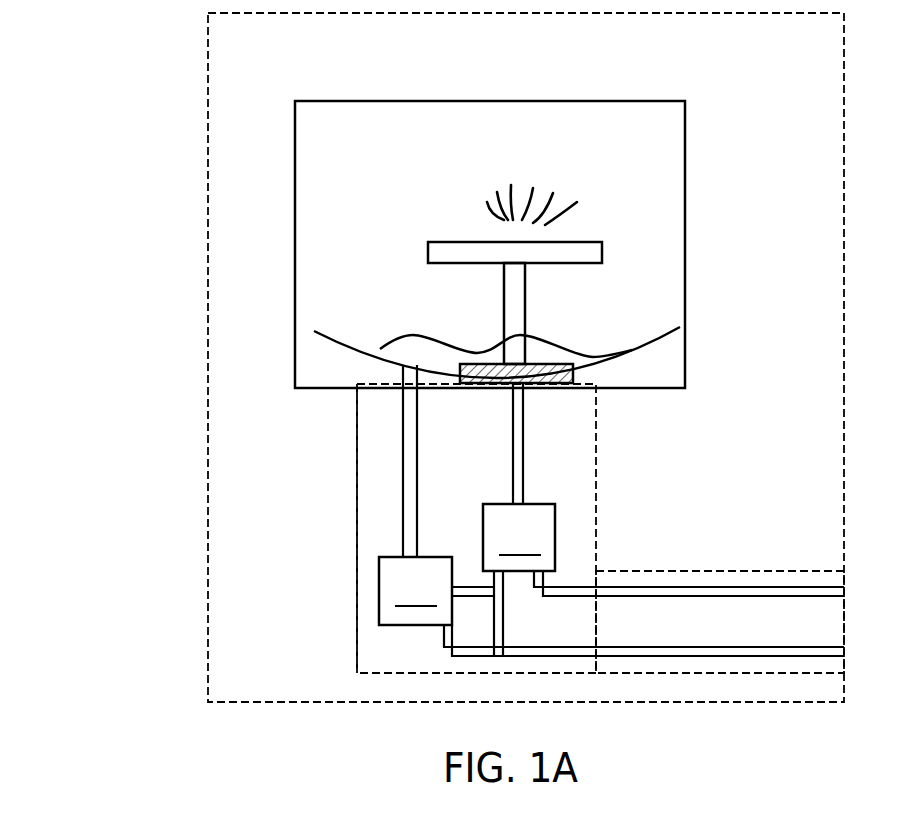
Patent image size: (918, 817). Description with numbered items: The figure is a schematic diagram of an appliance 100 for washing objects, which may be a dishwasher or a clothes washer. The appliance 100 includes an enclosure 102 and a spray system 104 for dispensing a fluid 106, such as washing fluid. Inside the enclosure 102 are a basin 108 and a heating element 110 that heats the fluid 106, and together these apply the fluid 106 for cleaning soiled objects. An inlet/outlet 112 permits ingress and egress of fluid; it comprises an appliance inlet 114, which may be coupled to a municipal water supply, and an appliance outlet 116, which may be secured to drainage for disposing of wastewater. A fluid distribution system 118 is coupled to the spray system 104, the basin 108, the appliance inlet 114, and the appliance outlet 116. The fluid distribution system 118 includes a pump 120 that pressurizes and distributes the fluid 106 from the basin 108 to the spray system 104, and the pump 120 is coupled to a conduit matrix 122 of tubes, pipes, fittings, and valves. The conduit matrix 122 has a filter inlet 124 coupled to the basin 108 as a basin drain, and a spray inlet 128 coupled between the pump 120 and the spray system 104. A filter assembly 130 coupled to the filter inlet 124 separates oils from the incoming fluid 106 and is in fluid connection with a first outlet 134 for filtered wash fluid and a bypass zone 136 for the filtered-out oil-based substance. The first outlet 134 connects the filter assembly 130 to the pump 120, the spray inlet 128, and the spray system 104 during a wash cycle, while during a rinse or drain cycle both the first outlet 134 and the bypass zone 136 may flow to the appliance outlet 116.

The appliance 100 is at (182, 50).
The enclosure 102 is at (702, 92).
The spray system 104 is at (473, 222).
The fluid 106 is at (590, 345).
The basin 108 is at (350, 360).
The heating element 110 is at (472, 362).
The inlet/outlet 112 is at (752, 570).
The appliance inlet 114 is at (660, 587).
The appliance outlet 116 is at (706, 647).
The fluid distribution system 118 is at (348, 565).
The pump 120 is at (519, 537).
The conduit matrix 122 is at (612, 462).
The filter inlet 124 is at (418, 405).
The spray inlet 128 is at (525, 412).
The filter assembly 130 is at (415, 591).
The first outlet 134 is at (462, 587).
The bypass zone 136 is at (444, 650).